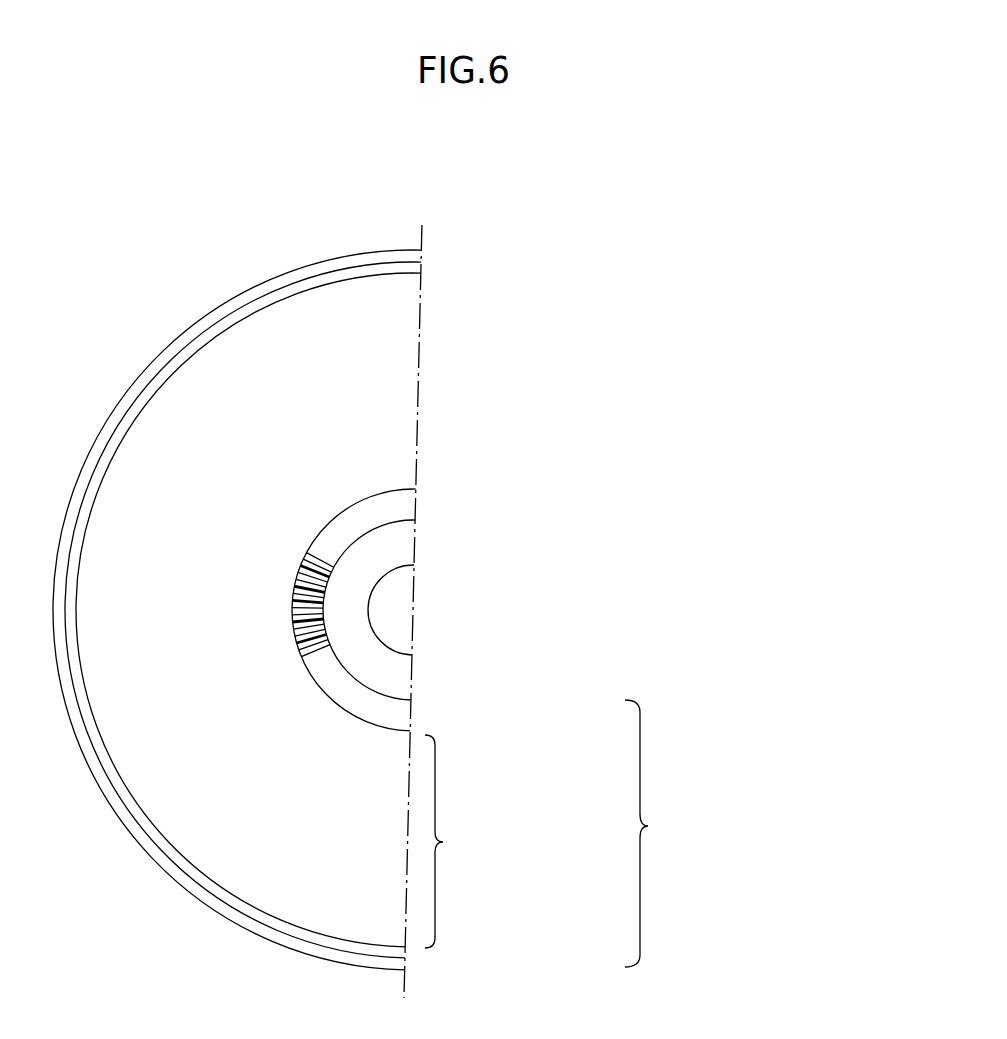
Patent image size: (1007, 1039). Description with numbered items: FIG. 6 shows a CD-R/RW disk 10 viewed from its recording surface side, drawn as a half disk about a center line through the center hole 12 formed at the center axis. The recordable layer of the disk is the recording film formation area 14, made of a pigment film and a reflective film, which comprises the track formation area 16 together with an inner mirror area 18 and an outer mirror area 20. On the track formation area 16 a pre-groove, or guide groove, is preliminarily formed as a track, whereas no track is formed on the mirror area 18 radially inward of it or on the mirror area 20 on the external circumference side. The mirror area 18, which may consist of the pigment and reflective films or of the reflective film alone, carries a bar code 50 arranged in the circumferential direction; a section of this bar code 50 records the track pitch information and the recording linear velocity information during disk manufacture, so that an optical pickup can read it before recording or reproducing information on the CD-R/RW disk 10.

The CD-R/RW disk 10 is at (513, 408).
The center hole 12 is at (394, 566).
The bar code 50 is at (320, 627).
The mirror area 18 is at (395, 718).
The track formation area 16 is at (528, 841).
The mirror area 20 is at (390, 955).
The recording film formation area 14 is at (766, 833).